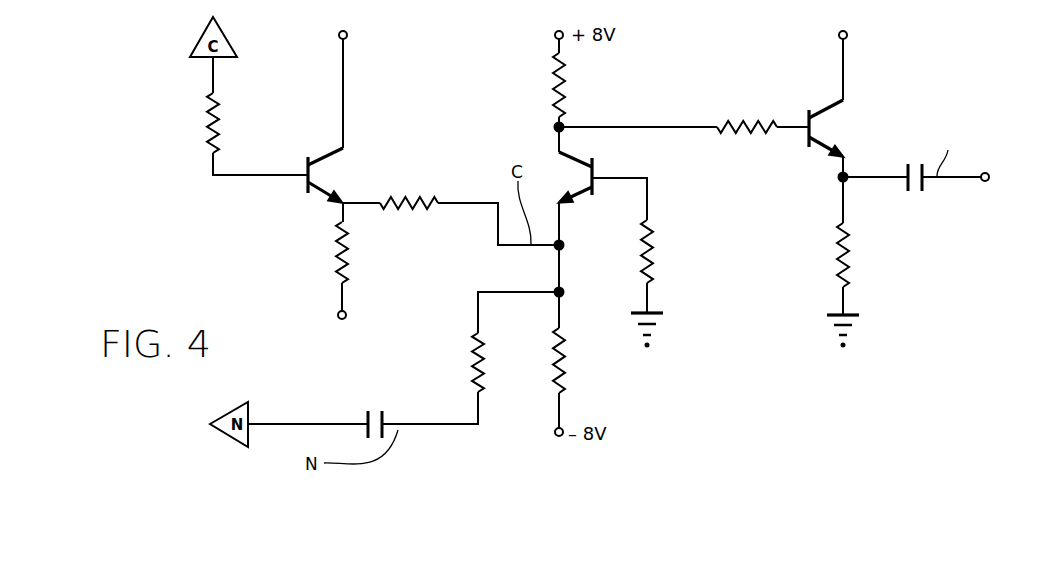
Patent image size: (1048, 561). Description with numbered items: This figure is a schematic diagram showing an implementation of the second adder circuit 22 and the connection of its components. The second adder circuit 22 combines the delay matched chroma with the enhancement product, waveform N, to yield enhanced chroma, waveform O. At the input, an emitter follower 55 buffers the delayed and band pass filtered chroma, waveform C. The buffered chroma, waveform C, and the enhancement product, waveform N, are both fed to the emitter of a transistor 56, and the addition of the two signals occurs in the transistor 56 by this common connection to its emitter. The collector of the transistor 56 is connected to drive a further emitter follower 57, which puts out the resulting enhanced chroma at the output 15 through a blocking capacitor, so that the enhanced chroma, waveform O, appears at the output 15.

The emitter follower 55 is at (310, 175).
The transistor 56 is at (595, 167).
The emitter follower 57 is at (812, 128).
The second adder circuit 22 is at (685, 360).
The output 15 is at (939, 186).